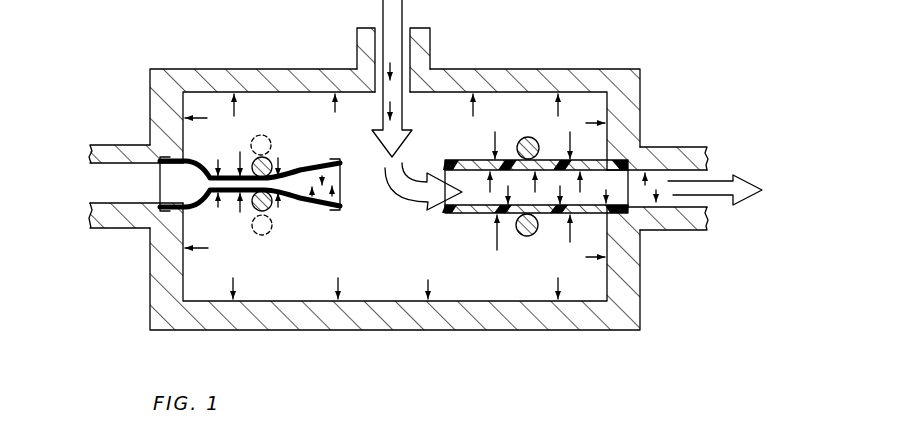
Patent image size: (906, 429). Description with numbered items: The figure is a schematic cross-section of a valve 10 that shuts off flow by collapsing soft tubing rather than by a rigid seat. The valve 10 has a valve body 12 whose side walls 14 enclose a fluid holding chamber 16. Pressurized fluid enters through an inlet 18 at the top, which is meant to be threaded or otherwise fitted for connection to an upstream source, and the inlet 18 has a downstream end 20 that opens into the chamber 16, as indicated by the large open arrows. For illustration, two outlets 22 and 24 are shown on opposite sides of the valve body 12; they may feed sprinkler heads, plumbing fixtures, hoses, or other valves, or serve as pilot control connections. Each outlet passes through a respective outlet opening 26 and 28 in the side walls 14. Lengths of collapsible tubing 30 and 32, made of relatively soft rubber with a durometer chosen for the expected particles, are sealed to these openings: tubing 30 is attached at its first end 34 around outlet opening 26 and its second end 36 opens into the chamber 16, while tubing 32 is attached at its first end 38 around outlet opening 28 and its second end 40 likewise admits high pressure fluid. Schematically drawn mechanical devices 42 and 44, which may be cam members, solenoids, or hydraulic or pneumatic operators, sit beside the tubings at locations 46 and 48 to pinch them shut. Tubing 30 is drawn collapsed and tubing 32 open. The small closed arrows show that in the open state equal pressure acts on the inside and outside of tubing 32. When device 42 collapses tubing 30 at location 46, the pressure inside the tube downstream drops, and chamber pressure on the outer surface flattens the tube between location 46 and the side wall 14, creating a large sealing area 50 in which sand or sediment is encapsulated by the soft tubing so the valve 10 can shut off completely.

The valve 10 is at (572, 64).
The valve body 12 is at (630, 66).
The side walls 14 is at (633, 118).
The fluid holding chamber 16 is at (397, 264).
The inlet 18 is at (437, 52).
The downstream end 20 is at (409, 101).
The outlet 22 is at (128, 135).
The outlet 24 is at (701, 140).
The outlet opening 26 is at (173, 184).
The outlet opening 28 is at (622, 190).
The collapsible tubing 30 is at (269, 196).
The collapsible tubing 32 is at (468, 213).
The first end 34 is at (195, 158).
The second end 36 is at (343, 198).
The first end 38 is at (625, 240).
The second end 40 is at (446, 169).
The mechanical device 42 is at (269, 137).
The mechanical device 44 is at (530, 137).
The location 46 is at (252, 193).
The location 48 is at (540, 195).
The sealing area 50 is at (221, 205).